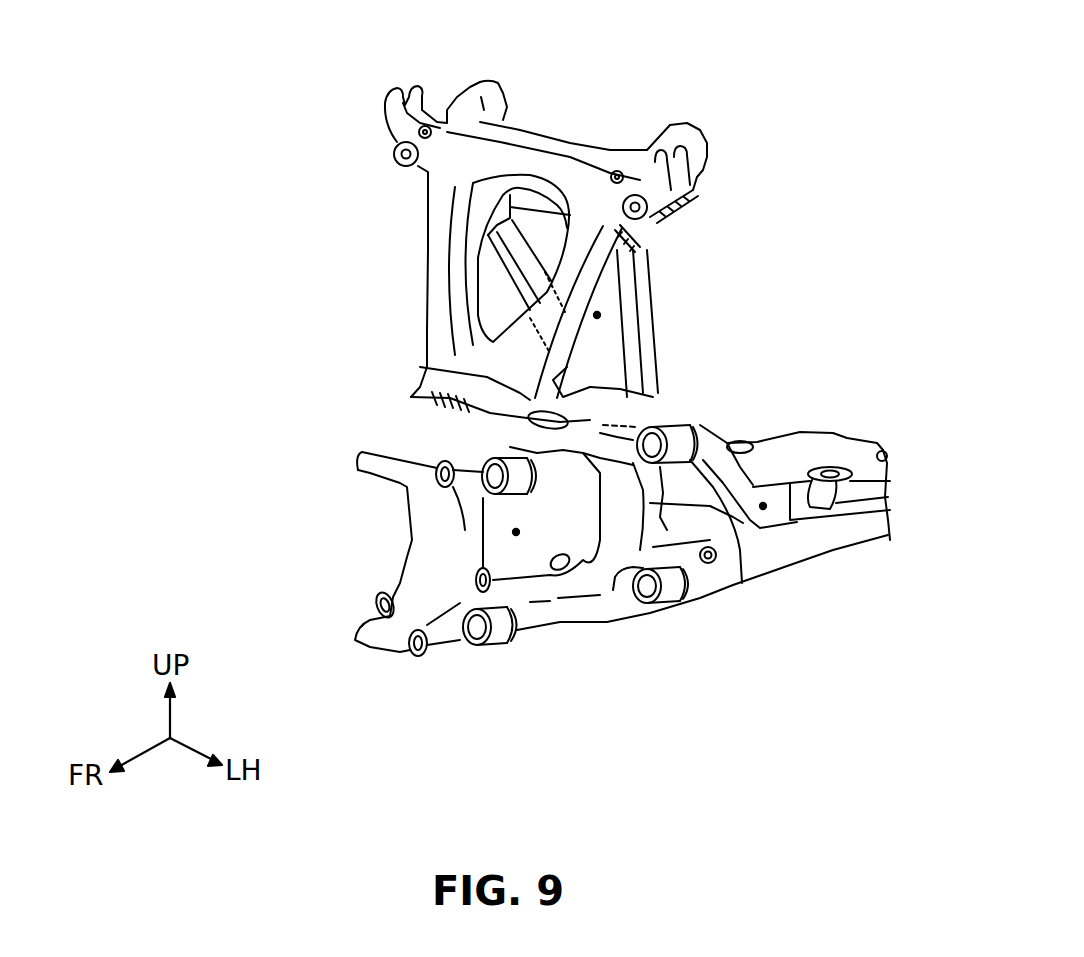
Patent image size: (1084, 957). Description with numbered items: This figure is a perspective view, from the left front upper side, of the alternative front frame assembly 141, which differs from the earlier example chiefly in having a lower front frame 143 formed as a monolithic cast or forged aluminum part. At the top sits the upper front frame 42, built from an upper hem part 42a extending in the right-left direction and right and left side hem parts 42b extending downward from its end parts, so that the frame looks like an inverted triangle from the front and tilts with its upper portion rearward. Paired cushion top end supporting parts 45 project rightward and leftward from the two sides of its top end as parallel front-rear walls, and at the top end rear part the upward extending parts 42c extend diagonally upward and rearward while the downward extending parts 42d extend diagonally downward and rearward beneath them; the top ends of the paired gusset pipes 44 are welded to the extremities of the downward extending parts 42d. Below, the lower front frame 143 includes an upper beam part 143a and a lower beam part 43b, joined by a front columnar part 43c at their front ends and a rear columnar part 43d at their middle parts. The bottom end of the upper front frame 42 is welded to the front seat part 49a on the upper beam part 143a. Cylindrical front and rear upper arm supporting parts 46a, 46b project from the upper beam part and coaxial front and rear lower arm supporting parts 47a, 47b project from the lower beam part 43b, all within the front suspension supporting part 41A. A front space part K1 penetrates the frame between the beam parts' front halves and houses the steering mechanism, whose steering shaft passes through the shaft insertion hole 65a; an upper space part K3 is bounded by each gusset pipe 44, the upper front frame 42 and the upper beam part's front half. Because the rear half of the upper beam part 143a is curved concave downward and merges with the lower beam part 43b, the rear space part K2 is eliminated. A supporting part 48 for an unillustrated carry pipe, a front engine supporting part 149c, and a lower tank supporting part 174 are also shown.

The front frame assembly 141 is at (255, 180).
The upper front frame 42 is at (418, 245).
The upper hem part 42a is at (552, 138).
The side hem part 42b is at (427, 310).
The upward extending part 42c is at (473, 88).
The downward extending part 42d is at (570, 215).
The gusset pipe 44 is at (622, 322).
The cushion top end supporting part 45 is at (395, 148).
The front upper arm supporting part 46a is at (529, 494).
The rear upper arm supporting part 46b is at (677, 423).
The front lower arm supporting part 47a is at (503, 648).
The rear lower arm supporting part 47b is at (685, 602).
The supporting part for a carry pipe 48 is at (360, 458).
The front seat part 49a is at (563, 337).
The shaft insertion hole 65a is at (540, 412).
The front suspension supporting part 41A is at (620, 672).
The lower beam part 43b is at (763, 565).
The front columnar part 43c is at (420, 553).
The rear columnar part 43d is at (733, 560).
The lower front frame 143 is at (553, 635).
The upper beam part 143a is at (713, 448).
The front engine supporting part 149c is at (847, 442).
The lower tank supporting part 174 is at (830, 467).
The front space part K1 is at (517, 535).
The rear space part K2 is at (767, 508).
The upper space part K3 is at (600, 315).